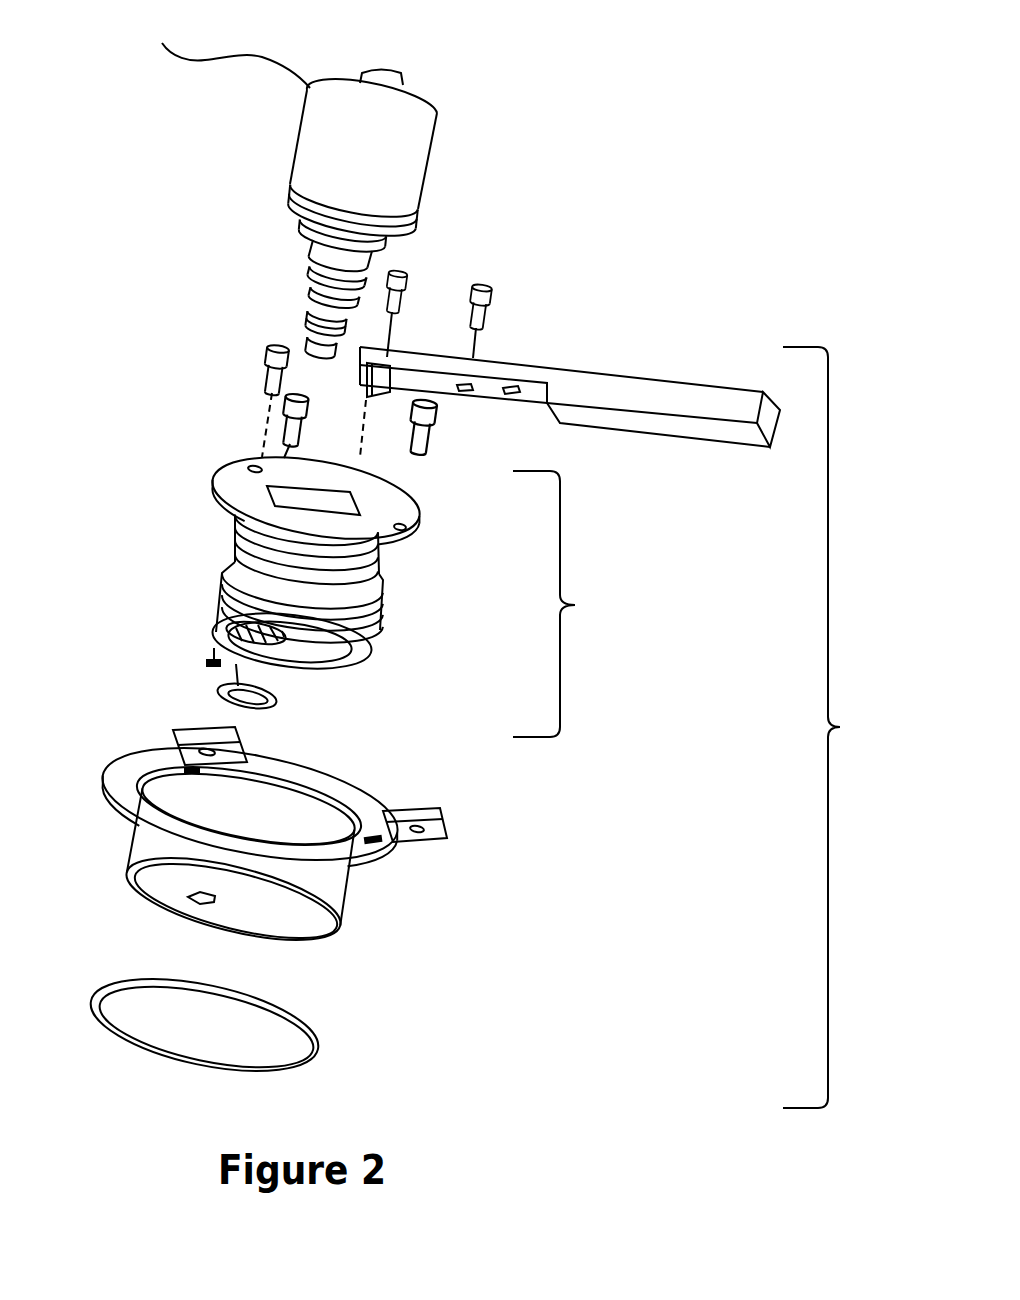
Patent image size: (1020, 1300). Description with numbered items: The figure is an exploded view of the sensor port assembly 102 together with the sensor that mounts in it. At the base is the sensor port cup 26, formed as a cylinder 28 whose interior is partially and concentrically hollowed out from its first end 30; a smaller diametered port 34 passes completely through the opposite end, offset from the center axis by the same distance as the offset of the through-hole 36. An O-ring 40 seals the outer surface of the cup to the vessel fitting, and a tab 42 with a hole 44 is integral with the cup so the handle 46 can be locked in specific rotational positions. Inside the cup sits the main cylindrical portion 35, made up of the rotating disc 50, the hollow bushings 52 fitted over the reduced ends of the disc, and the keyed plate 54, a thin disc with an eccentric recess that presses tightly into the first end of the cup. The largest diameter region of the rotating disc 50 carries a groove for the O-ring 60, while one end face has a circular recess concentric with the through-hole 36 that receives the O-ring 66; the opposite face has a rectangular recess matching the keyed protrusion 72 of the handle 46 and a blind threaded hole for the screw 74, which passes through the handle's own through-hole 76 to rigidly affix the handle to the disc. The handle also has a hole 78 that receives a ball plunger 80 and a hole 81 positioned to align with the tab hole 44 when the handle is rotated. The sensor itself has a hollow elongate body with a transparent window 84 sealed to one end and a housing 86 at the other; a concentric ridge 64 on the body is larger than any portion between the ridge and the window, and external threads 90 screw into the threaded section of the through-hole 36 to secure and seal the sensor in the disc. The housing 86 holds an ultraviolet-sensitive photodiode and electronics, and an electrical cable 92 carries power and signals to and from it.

The sensor port cup 26 is at (527, 887).
The cylinder 28 is at (157, 838).
The first end 30 is at (133, 750).
The port 34 is at (190, 897).
The main cylindrical portion 35 is at (576, 604).
The through-hole 36 is at (220, 645).
The O-ring 40 is at (320, 1047).
The tab 42 is at (440, 833).
The hole 44 is at (420, 834).
The handle 46 is at (623, 388).
The rotating disc 50 is at (222, 560).
The bushings 52 is at (385, 550).
The keyed plate 54 is at (213, 483).
The O-ring 60 is at (367, 625).
The ridge 64 is at (307, 268).
The O-ring 66 is at (277, 700).
The keyed protrusion 72 is at (367, 387).
The screw 74 is at (402, 277).
The through-hole 76 is at (314, 333).
The hole 78 is at (465, 392).
The ball plunger 80 is at (493, 293).
The hole 81 is at (517, 386).
The transparent window 84 is at (313, 367).
The housing 86 is at (246, 118).
The external threads 90 is at (311, 317).
The electrical cable 92 is at (200, 57).
The assembly 102 is at (850, 727).